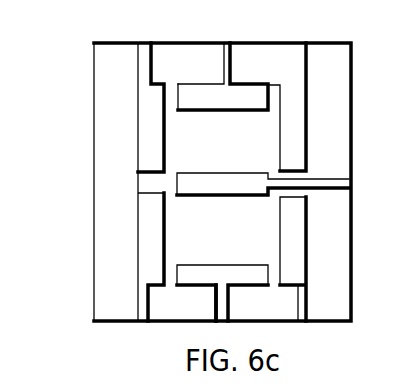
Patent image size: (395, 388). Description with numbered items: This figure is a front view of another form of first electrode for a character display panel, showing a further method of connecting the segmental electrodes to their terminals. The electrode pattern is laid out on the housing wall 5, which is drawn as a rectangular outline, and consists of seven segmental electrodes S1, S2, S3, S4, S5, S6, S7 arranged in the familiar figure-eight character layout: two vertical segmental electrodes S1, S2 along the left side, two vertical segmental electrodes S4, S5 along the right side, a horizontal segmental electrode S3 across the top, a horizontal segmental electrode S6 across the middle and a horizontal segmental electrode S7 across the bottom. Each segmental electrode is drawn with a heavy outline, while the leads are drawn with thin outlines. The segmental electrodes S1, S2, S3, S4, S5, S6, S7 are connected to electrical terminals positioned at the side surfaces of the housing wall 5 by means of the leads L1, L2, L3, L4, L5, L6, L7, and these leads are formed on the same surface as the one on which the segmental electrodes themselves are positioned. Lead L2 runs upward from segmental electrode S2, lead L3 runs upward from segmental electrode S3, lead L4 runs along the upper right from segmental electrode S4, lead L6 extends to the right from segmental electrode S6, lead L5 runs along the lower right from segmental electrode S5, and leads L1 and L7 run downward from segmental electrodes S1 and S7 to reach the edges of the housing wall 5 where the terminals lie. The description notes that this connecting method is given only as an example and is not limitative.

The housing wall 5 is at (356, 98).
The lead L1 is at (150, 308).
The lead L2 is at (139, 70).
The lead L3 is at (223, 64).
The lead L4 is at (304, 69).
The lead L5 is at (303, 312).
The lead L6 is at (330, 193).
The lead L7 is at (230, 310).
The segmental electrode S1 is at (138, 238).
The segmental electrode S2 is at (139, 141).
The segmental electrode S3 is at (208, 104).
The segmental electrode S4 is at (293, 150).
The segmental electrode S5 is at (297, 244).
The segmental electrode S6 is at (197, 177).
The segmental electrode S7 is at (212, 265).